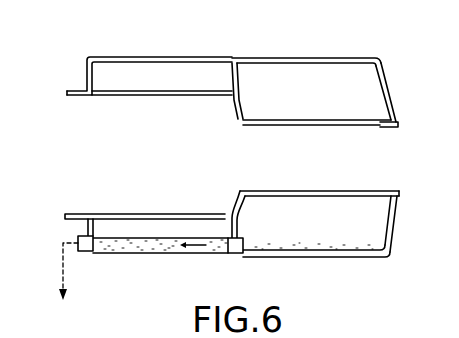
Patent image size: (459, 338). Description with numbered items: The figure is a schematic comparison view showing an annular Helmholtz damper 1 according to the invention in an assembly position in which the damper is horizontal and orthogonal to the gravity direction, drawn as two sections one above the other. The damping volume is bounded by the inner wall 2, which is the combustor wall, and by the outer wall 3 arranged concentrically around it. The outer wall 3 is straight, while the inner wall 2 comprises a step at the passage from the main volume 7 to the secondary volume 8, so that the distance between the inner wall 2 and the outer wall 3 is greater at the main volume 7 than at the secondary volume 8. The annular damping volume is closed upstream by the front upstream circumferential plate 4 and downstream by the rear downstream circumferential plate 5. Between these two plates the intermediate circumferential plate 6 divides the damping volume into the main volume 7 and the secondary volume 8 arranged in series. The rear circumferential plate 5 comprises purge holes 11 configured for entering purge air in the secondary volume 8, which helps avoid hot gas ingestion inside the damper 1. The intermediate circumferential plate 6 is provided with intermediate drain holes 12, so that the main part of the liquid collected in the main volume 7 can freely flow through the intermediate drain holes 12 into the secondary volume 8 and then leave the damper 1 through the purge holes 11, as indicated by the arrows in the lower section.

The annular Helmholtz damper 1 is at (83, 130).
The inner wall 2 is at (368, 128).
The outer wall 3 is at (315, 60).
The front upstream circumferential plate 4 is at (397, 95).
The rear downstream circumferential plate 5 is at (87, 72).
The intermediate circumferential plate 6 is at (239, 68).
The main volume 7 is at (324, 108).
The secondary volume 8 is at (178, 88).
The purge holes 11 is at (87, 252).
The intermediate drain holes 12 is at (236, 254).